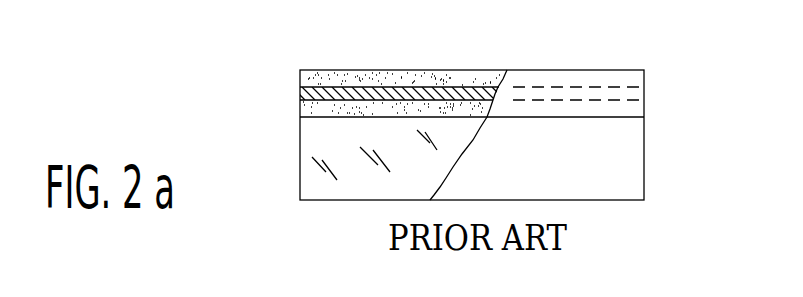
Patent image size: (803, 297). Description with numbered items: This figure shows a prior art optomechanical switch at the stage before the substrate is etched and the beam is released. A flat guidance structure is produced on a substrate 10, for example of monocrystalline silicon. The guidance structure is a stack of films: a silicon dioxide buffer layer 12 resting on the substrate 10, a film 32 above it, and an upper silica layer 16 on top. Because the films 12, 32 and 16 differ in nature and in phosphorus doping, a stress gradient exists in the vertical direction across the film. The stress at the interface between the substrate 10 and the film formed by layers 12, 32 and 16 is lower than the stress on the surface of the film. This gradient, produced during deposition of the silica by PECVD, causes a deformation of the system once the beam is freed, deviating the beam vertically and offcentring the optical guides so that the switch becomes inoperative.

The substrate 10 is at (313, 137).
The silicon dioxide buffer layer 12 is at (300, 113).
The upper silica layer 16 is at (301, 80).
The film 32 is at (453, 93).